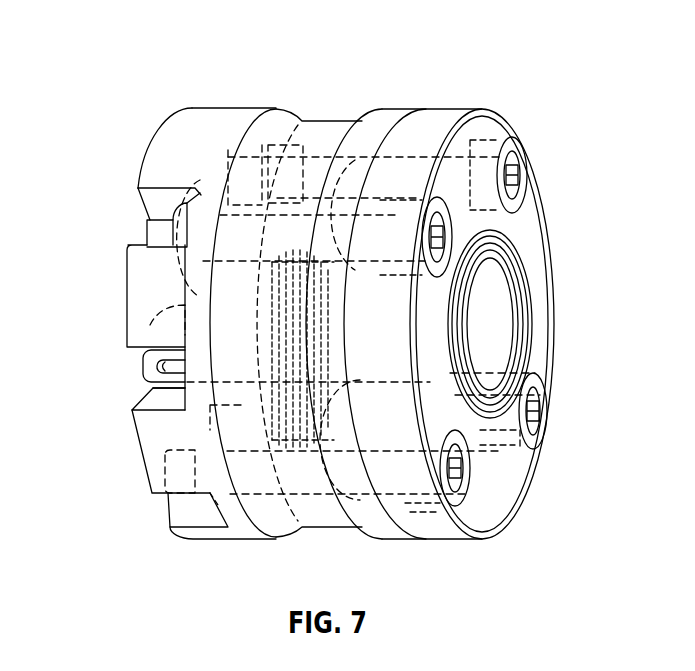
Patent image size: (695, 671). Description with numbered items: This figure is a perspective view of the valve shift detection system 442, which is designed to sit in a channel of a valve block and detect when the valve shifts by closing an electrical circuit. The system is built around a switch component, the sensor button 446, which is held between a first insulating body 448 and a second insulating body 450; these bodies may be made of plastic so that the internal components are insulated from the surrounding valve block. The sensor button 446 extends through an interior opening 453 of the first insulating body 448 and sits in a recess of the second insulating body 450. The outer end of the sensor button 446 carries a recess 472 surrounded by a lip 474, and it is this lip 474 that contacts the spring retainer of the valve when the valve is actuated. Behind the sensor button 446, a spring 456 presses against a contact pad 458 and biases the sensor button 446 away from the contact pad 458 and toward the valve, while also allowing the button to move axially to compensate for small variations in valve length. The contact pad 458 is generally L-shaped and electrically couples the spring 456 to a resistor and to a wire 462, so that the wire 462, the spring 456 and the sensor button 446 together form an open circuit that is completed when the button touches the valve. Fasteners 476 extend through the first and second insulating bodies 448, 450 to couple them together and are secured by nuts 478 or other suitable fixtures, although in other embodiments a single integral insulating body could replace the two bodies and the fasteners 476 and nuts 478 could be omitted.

The valve shift detection system 442 is at (108, 50).
The second insulating body 450 is at (216, 118).
The interior opening 453 is at (480, 228).
The fasteners 476 is at (513, 158).
The lip 474 is at (518, 260).
The sensor button 446 is at (527, 295).
The recess 472 is at (487, 357).
The first insulating body 448 is at (510, 482).
The nuts 478 is at (176, 236).
The contact pad 458 is at (160, 366).
The wire 462 is at (155, 390).
The spring 456 is at (252, 480).